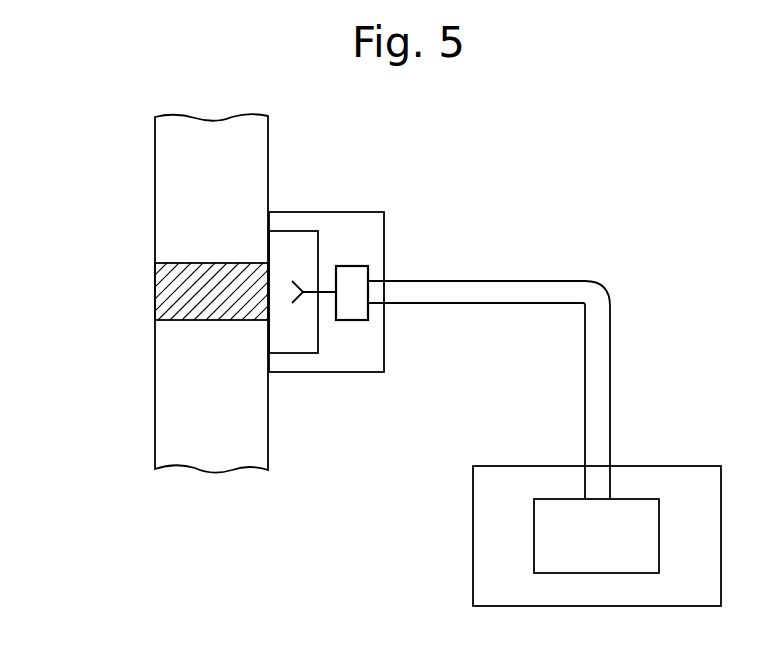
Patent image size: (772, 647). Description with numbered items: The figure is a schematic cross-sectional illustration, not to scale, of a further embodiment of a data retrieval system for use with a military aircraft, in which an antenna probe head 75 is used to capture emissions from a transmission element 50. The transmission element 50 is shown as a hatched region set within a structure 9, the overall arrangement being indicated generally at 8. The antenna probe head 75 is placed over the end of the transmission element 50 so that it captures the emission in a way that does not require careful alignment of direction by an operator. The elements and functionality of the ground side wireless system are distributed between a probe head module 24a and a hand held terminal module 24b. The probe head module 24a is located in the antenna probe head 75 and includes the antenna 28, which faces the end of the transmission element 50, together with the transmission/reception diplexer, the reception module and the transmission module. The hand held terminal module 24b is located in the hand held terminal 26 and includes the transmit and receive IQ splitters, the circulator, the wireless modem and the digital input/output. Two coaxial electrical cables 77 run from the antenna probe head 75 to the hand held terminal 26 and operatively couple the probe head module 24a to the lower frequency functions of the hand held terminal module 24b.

The system 8 is at (88, 163).
The wall 9 is at (240, 153).
The transmission element 50 is at (190, 290).
The antenna probe head 75 is at (346, 212).
The antenna 28 is at (313, 293).
The probe head module 24a is at (352, 266).
The coaxial electrical cables 77 is at (545, 281).
The hand held terminal 26 is at (652, 466).
The hand held terminal module 24b is at (616, 551).